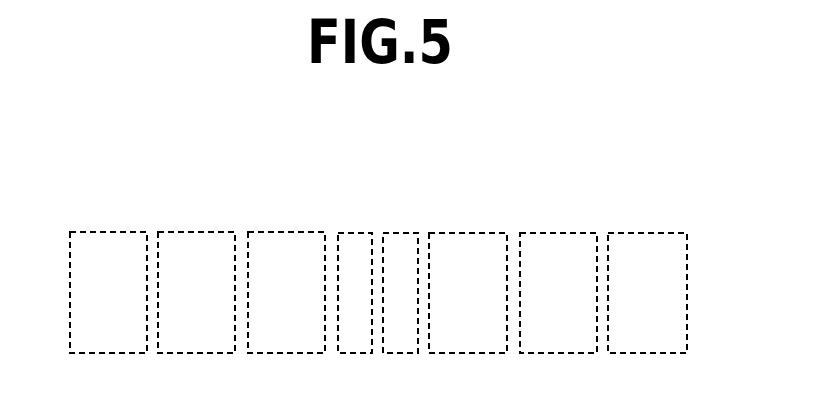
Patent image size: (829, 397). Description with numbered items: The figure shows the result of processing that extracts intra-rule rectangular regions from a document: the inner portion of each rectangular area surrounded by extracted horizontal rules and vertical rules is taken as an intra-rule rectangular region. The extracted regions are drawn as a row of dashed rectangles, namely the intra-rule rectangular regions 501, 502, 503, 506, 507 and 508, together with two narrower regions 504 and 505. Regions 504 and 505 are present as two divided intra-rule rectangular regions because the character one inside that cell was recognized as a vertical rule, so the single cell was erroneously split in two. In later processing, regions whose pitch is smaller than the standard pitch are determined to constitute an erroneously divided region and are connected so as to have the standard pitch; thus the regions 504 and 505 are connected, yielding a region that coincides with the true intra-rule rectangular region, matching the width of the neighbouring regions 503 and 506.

The intra-rule rectangular region 501 is at (102, 230).
The intra-rule rectangular region 502 is at (188, 230).
The intra-rule rectangular region 503 is at (275, 230).
The divided intra-rule rectangular region 504 is at (352, 232).
The divided intra-rule rectangular region 505 is at (402, 232).
The intra-rule rectangular region 506 is at (477, 232).
The intra-rule rectangular region 507 is at (560, 232).
The intra-rule rectangular region 508 is at (647, 232).